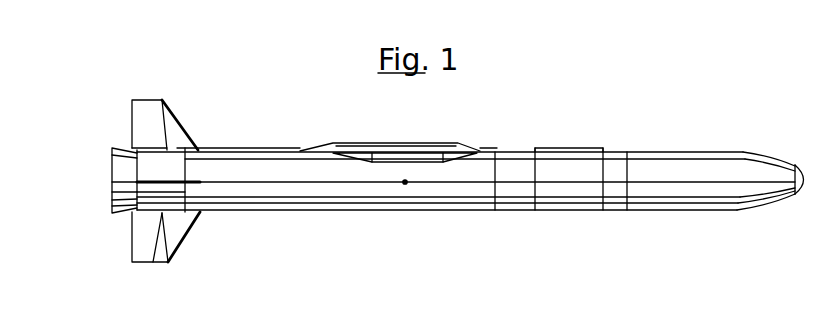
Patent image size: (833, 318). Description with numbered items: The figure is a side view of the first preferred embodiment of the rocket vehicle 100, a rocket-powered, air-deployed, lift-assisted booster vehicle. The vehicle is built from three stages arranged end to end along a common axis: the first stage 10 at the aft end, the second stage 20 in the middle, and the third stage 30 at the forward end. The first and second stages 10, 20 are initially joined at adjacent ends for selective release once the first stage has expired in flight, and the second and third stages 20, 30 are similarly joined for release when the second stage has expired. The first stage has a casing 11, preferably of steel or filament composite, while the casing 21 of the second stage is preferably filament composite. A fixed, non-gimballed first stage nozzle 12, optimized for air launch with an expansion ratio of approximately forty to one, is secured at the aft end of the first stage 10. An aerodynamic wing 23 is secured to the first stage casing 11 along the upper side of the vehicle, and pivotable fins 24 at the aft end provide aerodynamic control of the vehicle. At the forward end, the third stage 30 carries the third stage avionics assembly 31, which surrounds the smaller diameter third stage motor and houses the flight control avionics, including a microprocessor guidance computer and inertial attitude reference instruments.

The rocket vehicle 100 is at (506, 134).
The first stage 10 is at (347, 210).
The first stage casing 11 is at (272, 193).
The first stage nozzle 12 is at (113, 200).
The second stage 20 is at (583, 205).
The second stage casing 21 is at (588, 155).
The aerodynamic wing 23 is at (403, 143).
The fins 24 is at (173, 128).
The third stage 30 is at (683, 207).
The third stage avionics assembly 31 is at (690, 157).